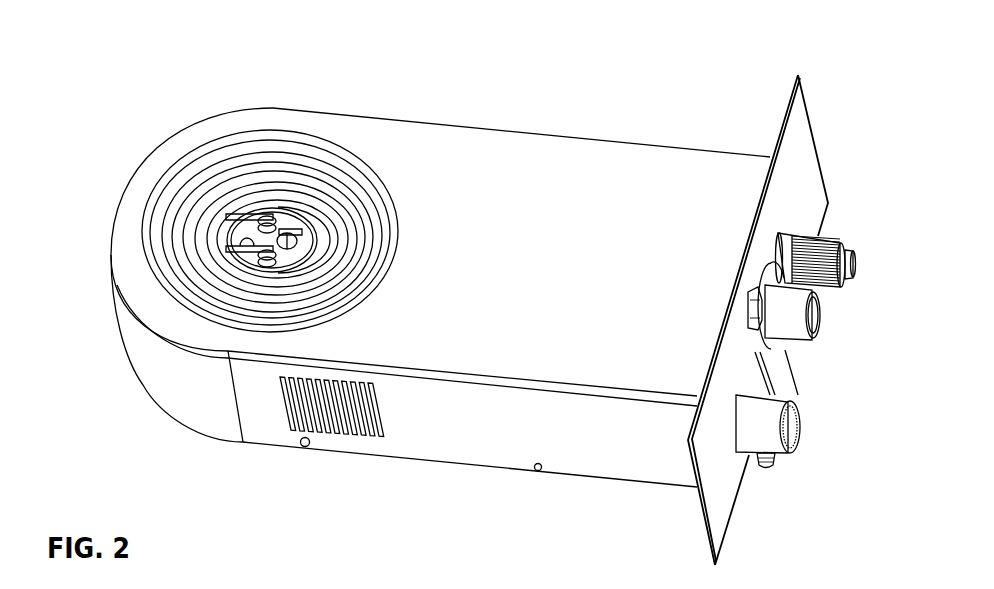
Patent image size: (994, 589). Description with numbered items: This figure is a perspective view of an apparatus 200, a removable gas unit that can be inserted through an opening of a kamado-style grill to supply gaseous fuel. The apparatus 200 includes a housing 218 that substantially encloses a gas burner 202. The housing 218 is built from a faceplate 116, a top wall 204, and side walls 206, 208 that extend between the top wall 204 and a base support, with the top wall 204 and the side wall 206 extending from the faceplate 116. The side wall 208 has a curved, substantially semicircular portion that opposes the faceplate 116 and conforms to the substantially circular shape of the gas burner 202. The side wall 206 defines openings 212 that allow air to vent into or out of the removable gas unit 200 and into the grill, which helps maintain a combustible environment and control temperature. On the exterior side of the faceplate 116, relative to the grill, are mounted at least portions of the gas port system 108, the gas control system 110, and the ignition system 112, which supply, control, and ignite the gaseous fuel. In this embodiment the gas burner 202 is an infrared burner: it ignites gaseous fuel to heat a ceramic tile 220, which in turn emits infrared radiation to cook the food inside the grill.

The apparatus 200 is at (143, 78).
The gas burner 202 is at (232, 199).
The top wall 204 is at (606, 163).
The side wall 206 is at (537, 455).
The side wall 208 is at (183, 407).
The openings 212 is at (338, 433).
The housing 218 is at (530, 105).
The ceramic tile 220 is at (305, 150).
The faceplate 116 is at (803, 128).
The ignition system 112 is at (825, 245).
The gas control system 110 is at (793, 330).
The gas port system 108 is at (775, 433).